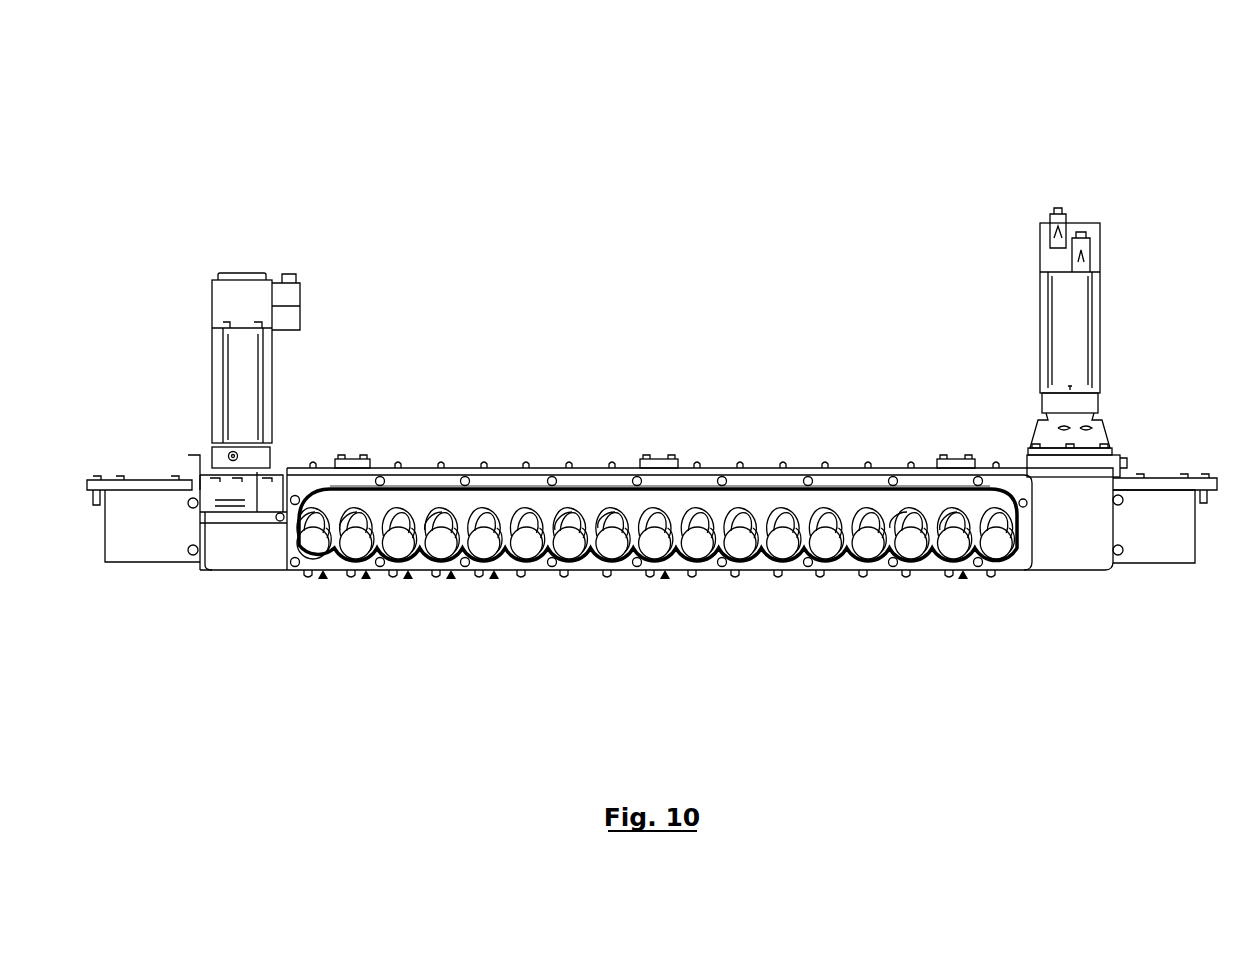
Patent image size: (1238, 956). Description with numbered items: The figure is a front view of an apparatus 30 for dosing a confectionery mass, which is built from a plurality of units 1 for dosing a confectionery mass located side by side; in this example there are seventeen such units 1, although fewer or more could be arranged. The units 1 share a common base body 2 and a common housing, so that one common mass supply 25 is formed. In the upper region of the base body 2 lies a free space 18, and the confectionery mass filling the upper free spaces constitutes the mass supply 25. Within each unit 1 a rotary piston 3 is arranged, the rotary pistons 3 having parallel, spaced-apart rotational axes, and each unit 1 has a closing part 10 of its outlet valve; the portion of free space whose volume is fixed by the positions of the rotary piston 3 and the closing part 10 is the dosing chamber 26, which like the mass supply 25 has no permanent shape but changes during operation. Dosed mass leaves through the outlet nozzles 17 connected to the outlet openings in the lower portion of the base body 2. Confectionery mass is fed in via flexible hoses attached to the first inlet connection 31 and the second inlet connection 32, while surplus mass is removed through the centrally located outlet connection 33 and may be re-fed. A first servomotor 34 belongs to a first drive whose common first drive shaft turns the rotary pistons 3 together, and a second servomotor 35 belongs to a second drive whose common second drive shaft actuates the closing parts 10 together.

The unit for dosing a confectionery mass 1 is at (322, 579).
The base body 2 is at (758, 487).
The rotary piston 3 is at (363, 517).
The closing part 10 is at (529, 548).
The outlet nozzle 17 is at (692, 576).
The free space 18 is at (418, 502).
The mass supply 25 is at (510, 498).
The dosing chamber 26 is at (604, 518).
The apparatus for dosing a confectionery mass 30 is at (718, 172).
The first inlet connection 31 is at (352, 462).
The second inlet connection 32 is at (673, 462).
The outlet connection 33 is at (948, 462).
The first servomotor 34 is at (1098, 233).
The second servomotor 35 is at (240, 300).